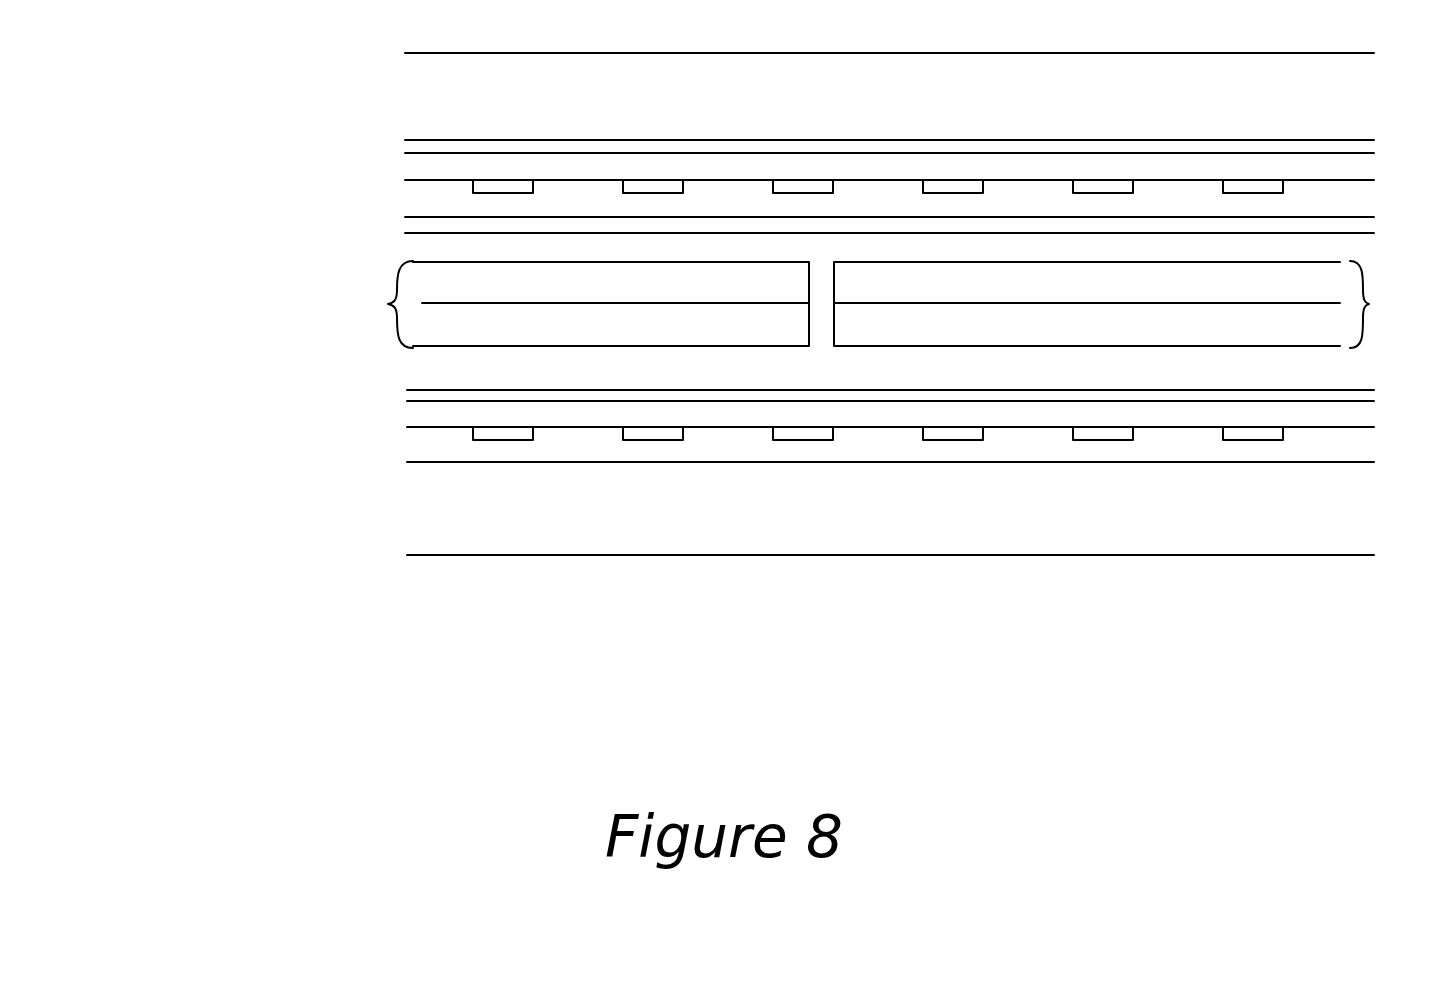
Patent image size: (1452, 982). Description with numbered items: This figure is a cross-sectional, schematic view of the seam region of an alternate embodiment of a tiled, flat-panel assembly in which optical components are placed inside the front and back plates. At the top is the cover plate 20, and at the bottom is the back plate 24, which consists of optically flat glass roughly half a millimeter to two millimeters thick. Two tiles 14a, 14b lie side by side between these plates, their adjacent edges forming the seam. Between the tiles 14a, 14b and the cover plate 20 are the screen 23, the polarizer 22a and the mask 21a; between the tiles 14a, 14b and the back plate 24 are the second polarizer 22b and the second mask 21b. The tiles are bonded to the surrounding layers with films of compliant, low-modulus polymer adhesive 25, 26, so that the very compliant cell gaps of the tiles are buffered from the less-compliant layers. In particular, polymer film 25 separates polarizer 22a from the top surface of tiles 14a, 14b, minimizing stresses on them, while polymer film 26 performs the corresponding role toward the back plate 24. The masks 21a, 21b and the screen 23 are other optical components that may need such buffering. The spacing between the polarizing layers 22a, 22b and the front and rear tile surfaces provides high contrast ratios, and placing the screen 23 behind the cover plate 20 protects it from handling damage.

The cover plate 20 is at (437, 92).
The screen 23 is at (420, 147).
The mask 21a is at (490, 184).
The polarizer 22a is at (423, 223).
The compliant polymer film 25 is at (383, 302).
The tile 14a is at (425, 247).
The tile 14b is at (1143, 304).
The compliant polymer film 26 is at (422, 360).
The second polarizer 22b is at (417, 392).
The second mask 21b is at (500, 432).
The back plate 24 is at (532, 522).